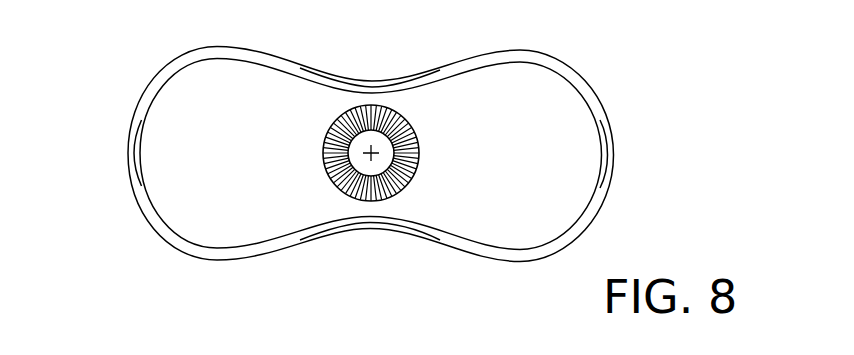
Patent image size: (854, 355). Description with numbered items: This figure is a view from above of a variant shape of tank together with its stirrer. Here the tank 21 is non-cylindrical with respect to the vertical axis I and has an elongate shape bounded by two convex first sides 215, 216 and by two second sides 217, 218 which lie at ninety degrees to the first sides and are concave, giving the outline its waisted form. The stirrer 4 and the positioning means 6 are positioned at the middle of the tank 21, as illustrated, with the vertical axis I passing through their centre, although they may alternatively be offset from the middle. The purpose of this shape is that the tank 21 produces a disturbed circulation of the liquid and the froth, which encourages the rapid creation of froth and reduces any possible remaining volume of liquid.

The tank 21 is at (612, 115).
The first side 215 is at (613, 180).
The first side 216 is at (130, 176).
The second side 217 is at (355, 80).
The second side 218 is at (363, 229).
The stirrer 4 is at (421, 153).
The positioning means 6 is at (385, 144).
The vertical axis I is at (379, 147).